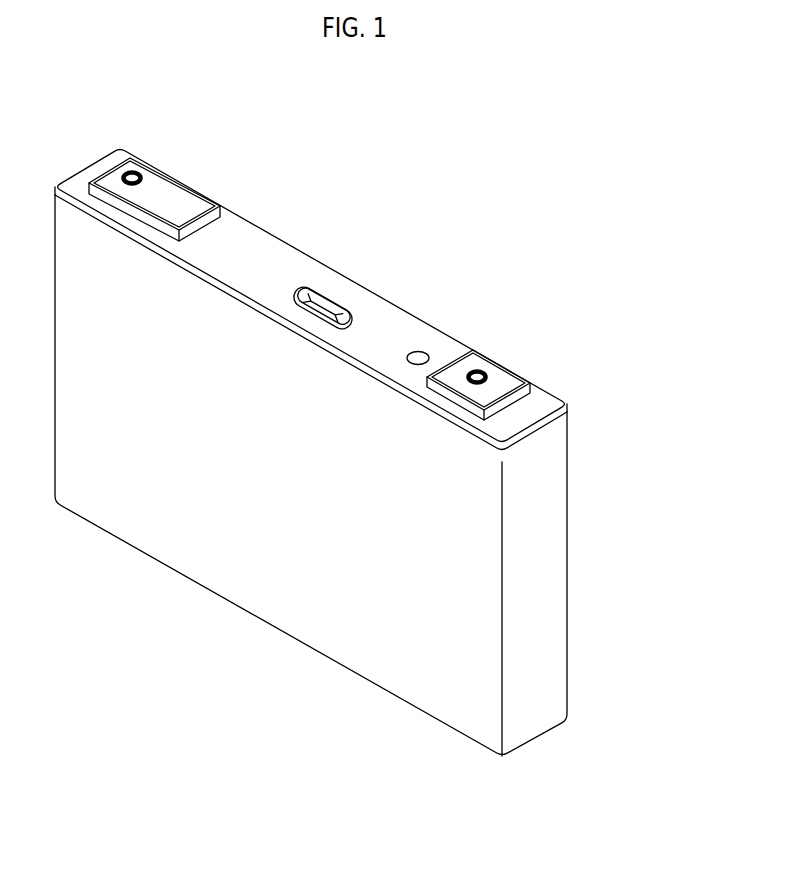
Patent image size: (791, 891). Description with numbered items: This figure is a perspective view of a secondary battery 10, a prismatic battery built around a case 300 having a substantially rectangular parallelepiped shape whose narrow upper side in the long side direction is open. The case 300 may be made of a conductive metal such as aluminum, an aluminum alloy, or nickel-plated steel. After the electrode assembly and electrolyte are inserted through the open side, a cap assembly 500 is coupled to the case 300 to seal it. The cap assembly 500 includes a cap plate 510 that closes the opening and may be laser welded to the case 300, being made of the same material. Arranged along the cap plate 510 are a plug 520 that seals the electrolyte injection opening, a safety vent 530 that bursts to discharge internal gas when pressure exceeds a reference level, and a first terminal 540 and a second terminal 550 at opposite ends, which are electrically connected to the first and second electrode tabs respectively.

The secondary battery 10 is at (666, 142).
The case 300 is at (567, 530).
The cap assembly 500 is at (498, 267).
The cap plate 510 is at (279, 258).
The plug 520 is at (420, 351).
The safety vent 530 is at (330, 300).
The first terminal 540 is at (193, 203).
The second terminal 550 is at (492, 368).